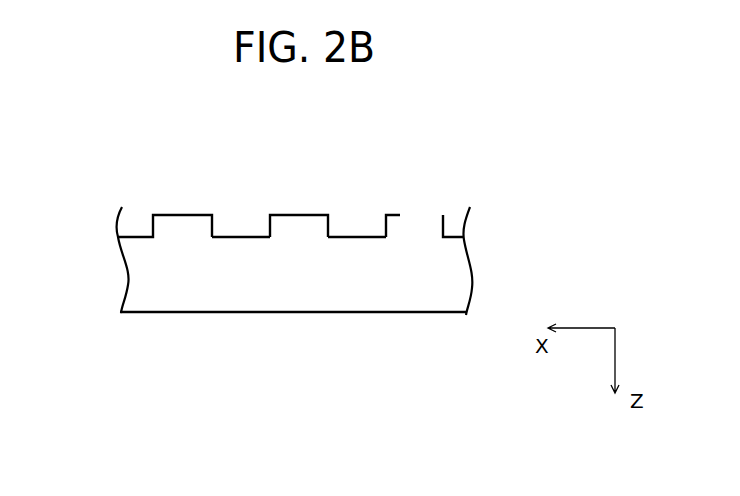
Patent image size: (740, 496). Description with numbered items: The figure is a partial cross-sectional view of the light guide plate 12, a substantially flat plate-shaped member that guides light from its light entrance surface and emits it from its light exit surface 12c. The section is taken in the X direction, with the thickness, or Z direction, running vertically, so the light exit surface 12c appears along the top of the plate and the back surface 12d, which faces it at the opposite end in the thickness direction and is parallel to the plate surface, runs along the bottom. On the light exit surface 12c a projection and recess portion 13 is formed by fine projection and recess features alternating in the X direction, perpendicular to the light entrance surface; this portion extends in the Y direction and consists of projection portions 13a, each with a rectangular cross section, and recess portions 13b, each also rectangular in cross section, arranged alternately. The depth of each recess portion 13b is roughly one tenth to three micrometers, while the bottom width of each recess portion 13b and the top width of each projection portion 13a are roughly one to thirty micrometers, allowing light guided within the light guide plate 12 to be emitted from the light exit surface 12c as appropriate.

The light guide plate 12 is at (295, 273).
The light exit surface 12c is at (290, 175).
The back surface 12d is at (295, 313).
The projection and recess portion 13 is at (290, 175).
The projection portion 13a is at (181, 222).
The recess portion 13b is at (305, 206).